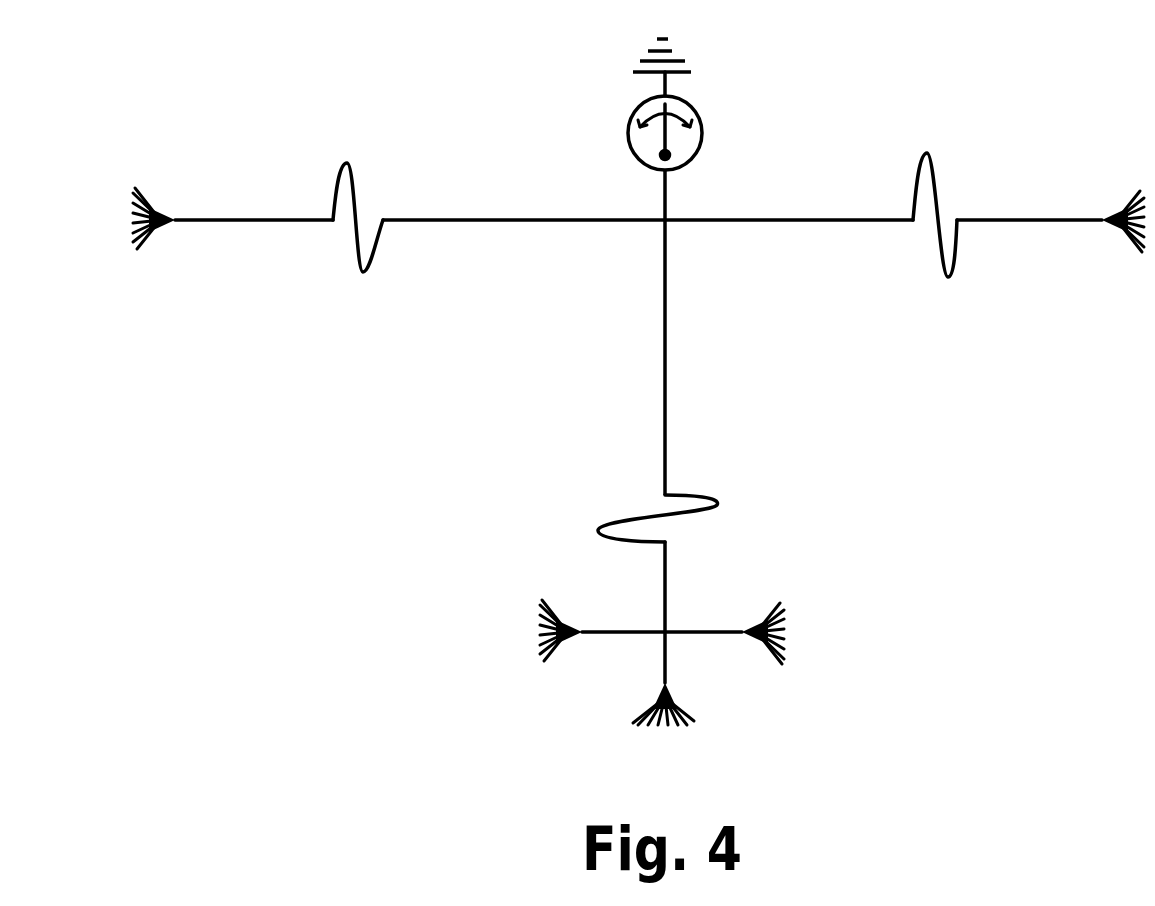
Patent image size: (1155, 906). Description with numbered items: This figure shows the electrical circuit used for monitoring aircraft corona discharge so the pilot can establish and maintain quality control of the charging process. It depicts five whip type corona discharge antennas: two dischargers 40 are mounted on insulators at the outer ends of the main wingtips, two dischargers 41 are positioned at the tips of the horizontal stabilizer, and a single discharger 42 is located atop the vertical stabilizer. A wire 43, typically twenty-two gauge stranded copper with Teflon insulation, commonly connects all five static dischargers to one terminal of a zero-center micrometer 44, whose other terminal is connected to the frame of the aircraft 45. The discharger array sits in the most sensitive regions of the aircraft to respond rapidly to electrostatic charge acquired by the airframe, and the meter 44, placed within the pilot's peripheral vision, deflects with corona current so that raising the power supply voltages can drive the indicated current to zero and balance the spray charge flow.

The dischargers 40 is at (638, 215).
The dischargers 41 is at (662, 589).
The discharger 42 is at (689, 709).
The wire 43 is at (805, 222).
The zero-center micrometer 44 is at (693, 127).
The frame of the aircraft 45 is at (691, 56).